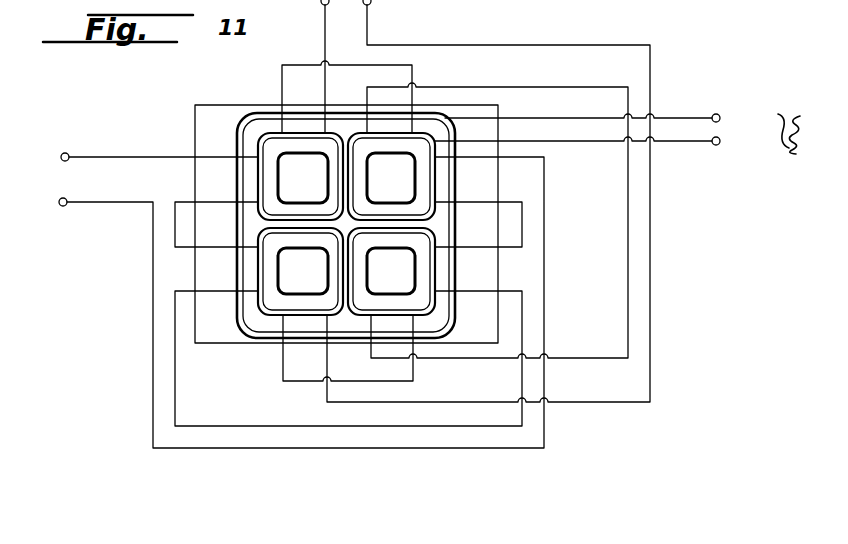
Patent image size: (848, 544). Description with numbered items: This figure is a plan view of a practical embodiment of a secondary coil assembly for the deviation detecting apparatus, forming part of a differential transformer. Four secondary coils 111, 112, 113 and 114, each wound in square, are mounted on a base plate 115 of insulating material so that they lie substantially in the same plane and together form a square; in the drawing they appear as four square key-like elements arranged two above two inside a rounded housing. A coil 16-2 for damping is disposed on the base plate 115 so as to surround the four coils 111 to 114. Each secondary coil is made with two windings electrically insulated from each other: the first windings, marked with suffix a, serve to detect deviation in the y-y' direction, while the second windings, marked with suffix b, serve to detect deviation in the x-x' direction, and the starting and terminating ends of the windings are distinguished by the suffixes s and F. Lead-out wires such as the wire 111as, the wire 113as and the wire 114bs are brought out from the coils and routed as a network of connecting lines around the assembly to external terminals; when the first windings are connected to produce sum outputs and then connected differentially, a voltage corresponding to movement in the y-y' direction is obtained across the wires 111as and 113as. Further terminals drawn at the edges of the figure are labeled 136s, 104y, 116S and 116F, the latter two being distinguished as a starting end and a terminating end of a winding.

The coil for damping 16-2 is at (246, 118).
The base plate 115 is at (194, 128).
The secondary coil 113 is at (304, 203).
The secondary coil 111 is at (391, 203).
The secondary coil 114 is at (304, 295).
The secondary coil 112 is at (391, 295).
The terminal 136s is at (322, 42).
The wire 114bs is at (372, 23).
The wire 113as is at (68, 155).
The terminal 104y is at (62, 198).
The wire 111as is at (66, 205).
The terminal 116S is at (720, 118).
The terminal 116F is at (719, 144).